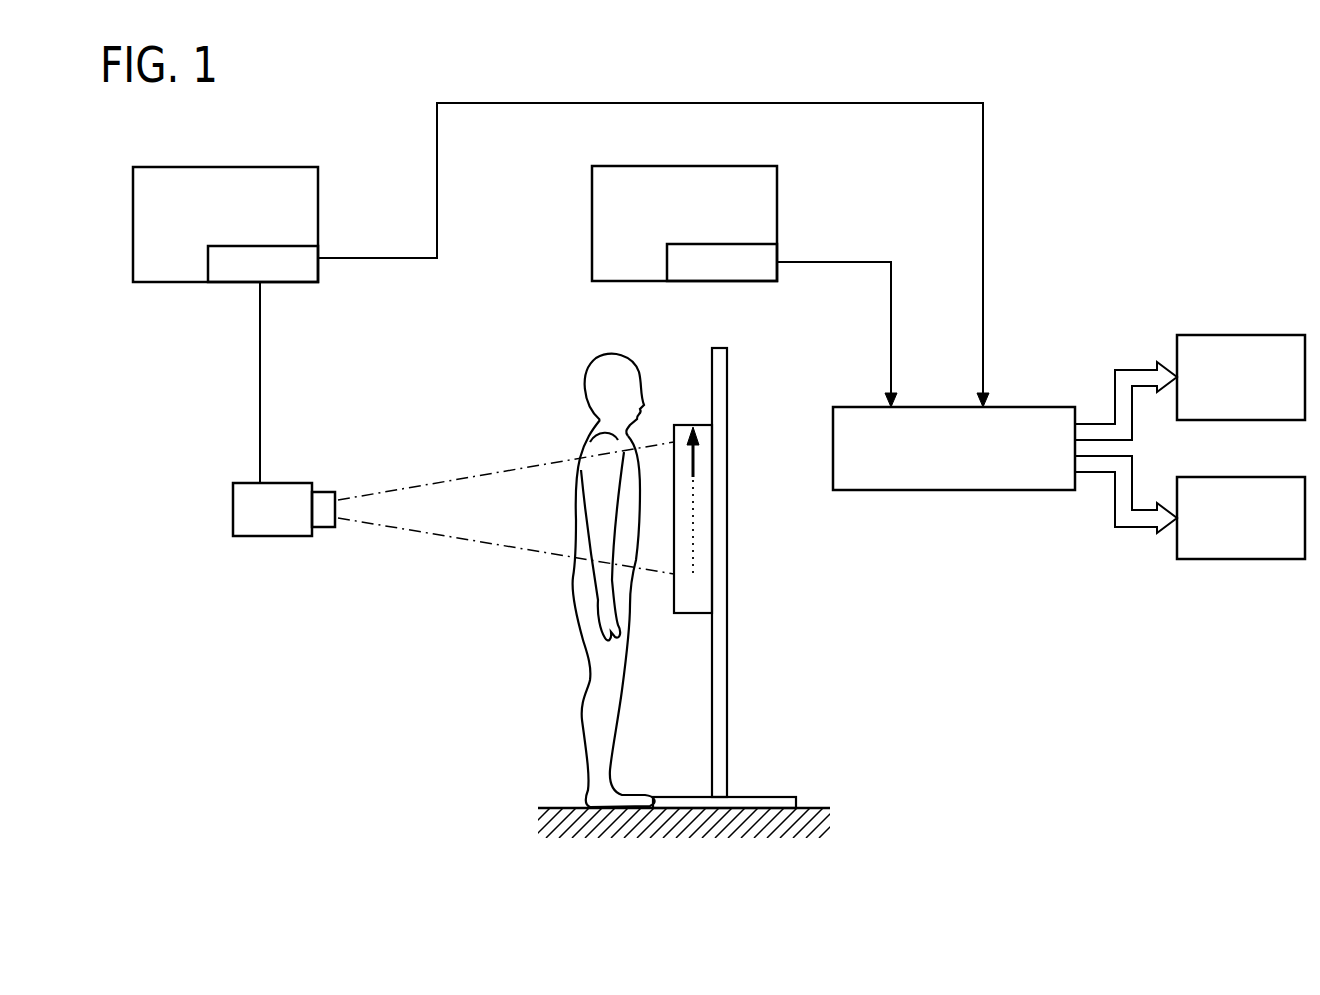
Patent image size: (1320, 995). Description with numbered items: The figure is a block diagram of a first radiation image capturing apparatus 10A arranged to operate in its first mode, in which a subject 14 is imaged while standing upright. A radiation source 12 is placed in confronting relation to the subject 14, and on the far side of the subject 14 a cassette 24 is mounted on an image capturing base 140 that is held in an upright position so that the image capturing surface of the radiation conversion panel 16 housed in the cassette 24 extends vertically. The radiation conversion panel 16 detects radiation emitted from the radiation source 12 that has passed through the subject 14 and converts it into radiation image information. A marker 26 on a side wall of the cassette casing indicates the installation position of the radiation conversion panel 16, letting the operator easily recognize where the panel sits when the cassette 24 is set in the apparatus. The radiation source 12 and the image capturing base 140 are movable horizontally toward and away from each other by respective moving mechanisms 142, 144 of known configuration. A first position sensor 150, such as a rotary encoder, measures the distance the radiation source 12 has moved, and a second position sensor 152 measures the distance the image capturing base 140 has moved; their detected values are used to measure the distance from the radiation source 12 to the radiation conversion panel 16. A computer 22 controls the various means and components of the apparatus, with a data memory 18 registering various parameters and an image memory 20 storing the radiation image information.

The first radiation image capturing apparatus 10A is at (378, 35).
The radiation source 12 is at (289, 480).
The subject 14 is at (608, 356).
The radiation conversion panel 16 is at (714, 505).
The data memory 18 is at (1280, 334).
The image memory 20 is at (1281, 560).
The computer 22 is at (1051, 406).
The cassette 24 is at (693, 614).
The marker 26 is at (705, 450).
The image capturing base 140 is at (727, 724).
The moving mechanism 142 is at (293, 166).
The moving mechanism 144 is at (753, 165).
The first position sensor 150 is at (300, 283).
The second position sensor 152 is at (759, 283).